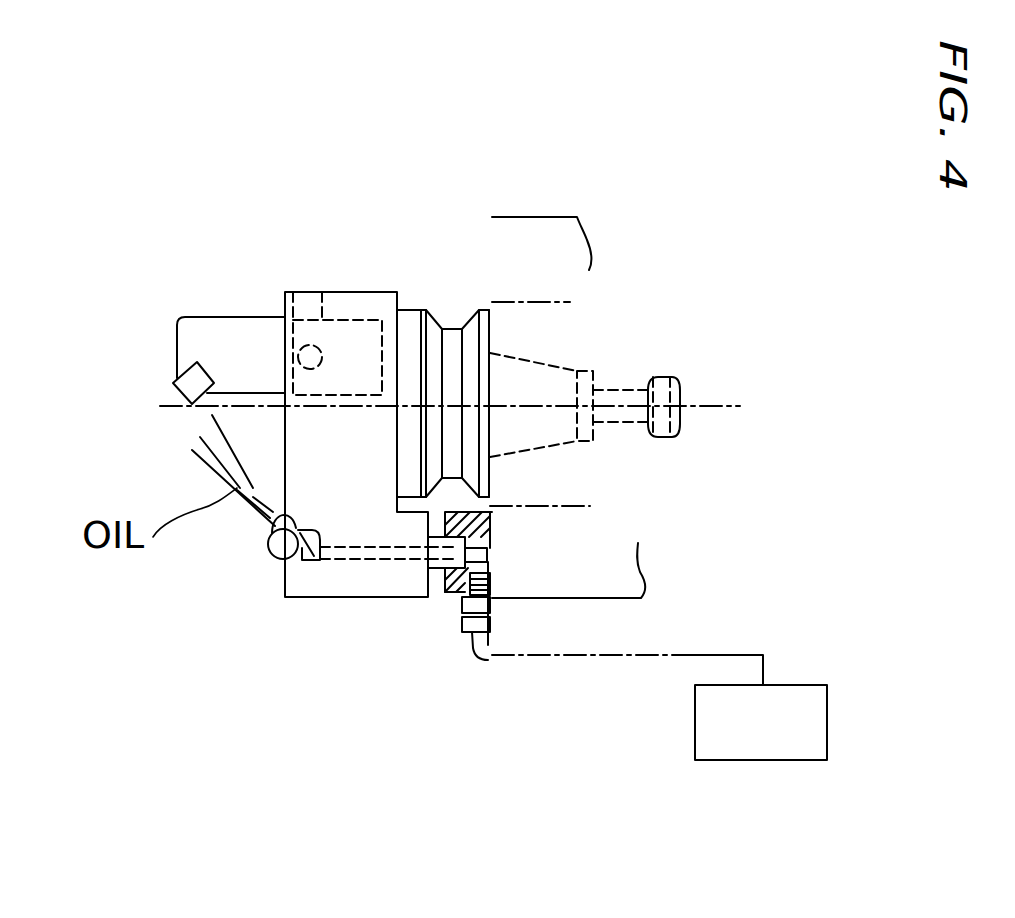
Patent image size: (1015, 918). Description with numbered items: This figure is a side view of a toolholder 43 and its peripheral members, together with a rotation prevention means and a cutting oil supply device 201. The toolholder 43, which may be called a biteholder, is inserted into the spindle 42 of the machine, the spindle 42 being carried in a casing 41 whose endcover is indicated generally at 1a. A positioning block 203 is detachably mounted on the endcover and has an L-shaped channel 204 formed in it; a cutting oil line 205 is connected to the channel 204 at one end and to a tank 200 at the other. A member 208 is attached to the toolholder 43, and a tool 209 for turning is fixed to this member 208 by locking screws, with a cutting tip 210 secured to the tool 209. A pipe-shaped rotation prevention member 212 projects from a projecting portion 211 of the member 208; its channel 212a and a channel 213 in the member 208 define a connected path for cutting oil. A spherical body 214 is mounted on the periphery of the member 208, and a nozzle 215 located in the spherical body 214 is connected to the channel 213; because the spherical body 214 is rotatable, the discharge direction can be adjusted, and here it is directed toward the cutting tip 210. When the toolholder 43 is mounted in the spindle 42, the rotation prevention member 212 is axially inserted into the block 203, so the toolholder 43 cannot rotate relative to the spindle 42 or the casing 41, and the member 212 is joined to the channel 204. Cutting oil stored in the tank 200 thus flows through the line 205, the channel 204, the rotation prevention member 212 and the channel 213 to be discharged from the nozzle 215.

The spindle 1a is at (493, 200).
The casing 41 is at (545, 218).
The spindle 42 is at (492, 275).
The toolholder 43 is at (420, 310).
The tank 200 is at (827, 735).
The cutting oil supply device 201 is at (642, 677).
The positioning block 203 is at (493, 617).
The L-shaped channel 204 is at (490, 492).
The cutting oil line 205 is at (707, 655).
The member 208 is at (287, 430).
The tool 209 is at (232, 328).
The cutting tip 210 is at (197, 402).
The projecting portion 211 is at (412, 587).
The rotation prevention member 212 is at (444, 593).
The channel 212a is at (420, 535).
The channel 213 is at (275, 563).
The spherical body 214 is at (305, 567).
The nozzle 215 is at (275, 517).